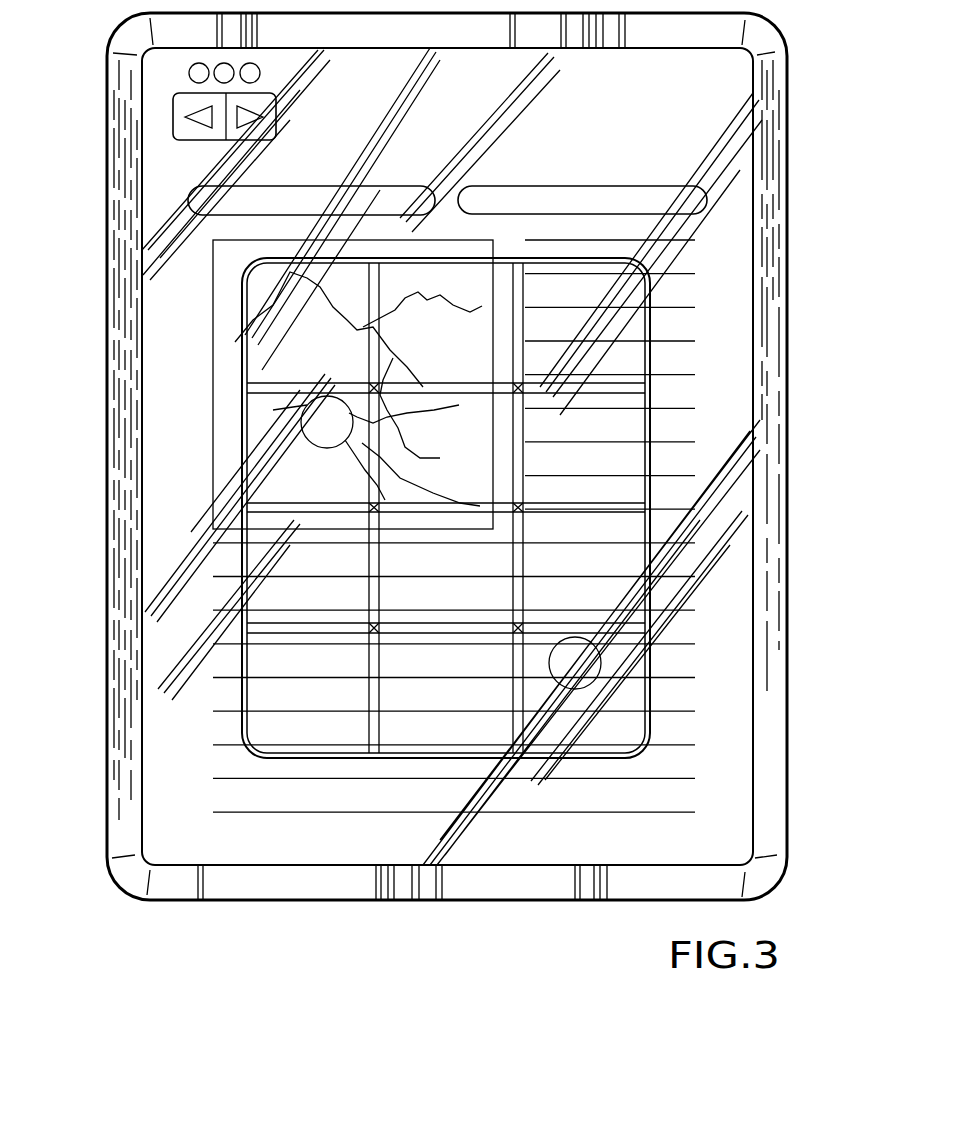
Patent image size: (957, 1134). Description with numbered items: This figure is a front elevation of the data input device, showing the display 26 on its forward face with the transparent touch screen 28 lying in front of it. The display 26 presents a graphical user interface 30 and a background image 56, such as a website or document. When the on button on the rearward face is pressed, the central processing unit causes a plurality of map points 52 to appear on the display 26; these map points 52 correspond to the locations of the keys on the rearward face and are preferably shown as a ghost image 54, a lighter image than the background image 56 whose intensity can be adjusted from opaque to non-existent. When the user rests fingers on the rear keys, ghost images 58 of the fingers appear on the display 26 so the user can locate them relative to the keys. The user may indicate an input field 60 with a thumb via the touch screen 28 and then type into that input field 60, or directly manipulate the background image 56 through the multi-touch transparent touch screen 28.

The display 26 is at (727, 695).
The transparent touch screen 28 is at (717, 433).
The graphical user interface 30 is at (730, 293).
The map points 52 is at (400, 263).
The ghost image 54 is at (648, 423).
The background image 56 is at (680, 273).
The ghost images of the fingers 58 is at (307, 414).
The input field 60 is at (703, 195).